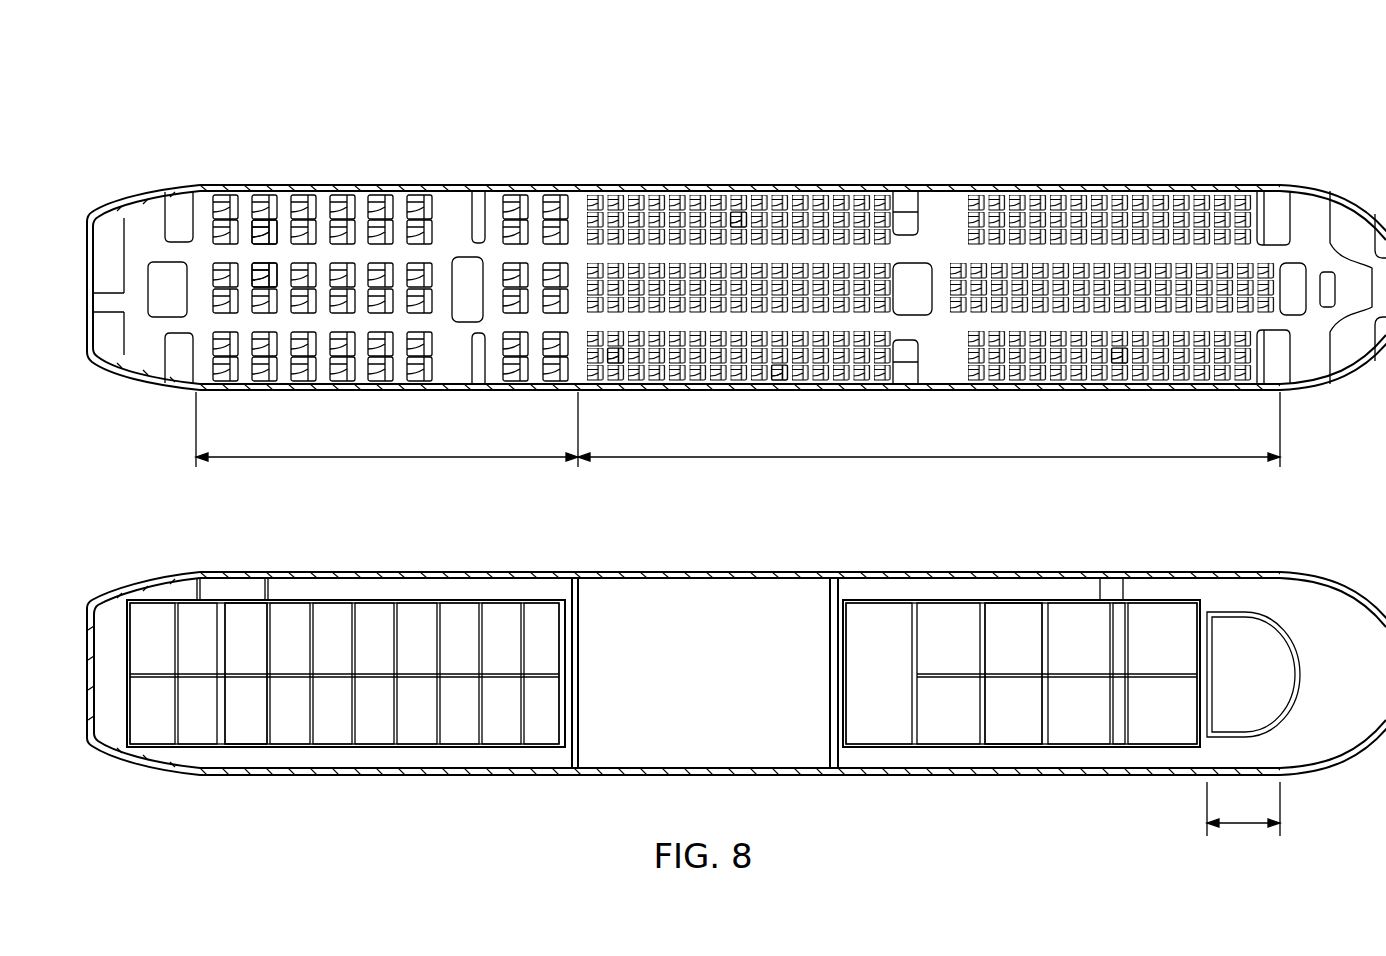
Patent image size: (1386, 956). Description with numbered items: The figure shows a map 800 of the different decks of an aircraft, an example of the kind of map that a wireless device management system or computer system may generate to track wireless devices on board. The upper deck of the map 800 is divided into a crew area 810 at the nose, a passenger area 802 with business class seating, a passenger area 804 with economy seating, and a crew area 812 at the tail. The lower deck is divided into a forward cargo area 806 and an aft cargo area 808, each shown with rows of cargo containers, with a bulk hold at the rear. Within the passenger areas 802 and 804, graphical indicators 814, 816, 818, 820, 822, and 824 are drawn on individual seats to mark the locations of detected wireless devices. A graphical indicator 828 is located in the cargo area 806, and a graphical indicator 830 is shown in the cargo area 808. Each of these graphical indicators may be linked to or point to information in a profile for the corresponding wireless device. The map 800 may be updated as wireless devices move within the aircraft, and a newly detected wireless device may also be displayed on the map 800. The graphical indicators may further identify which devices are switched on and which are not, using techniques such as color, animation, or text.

The map 800 is at (1147, 98).
The passenger area 802 is at (197, 143).
The passenger area 804 is at (1255, 143).
The cargo area 806 is at (562, 559).
The cargo area 808 is at (1202, 559).
The crew area 810 is at (85, 143).
The crew area 812 is at (1383, 143).
The graphical indicator 814 is at (262, 235).
The graphical indicator 816 is at (262, 277).
The graphical indicator 818 is at (613, 353).
The graphical indicator 820 is at (738, 220).
The graphical indicator 822 is at (781, 372).
The graphical indicator 824 is at (1121, 353).
The graphical indicator 828 is at (259, 689).
The graphical indicator 830 is at (1010, 697).